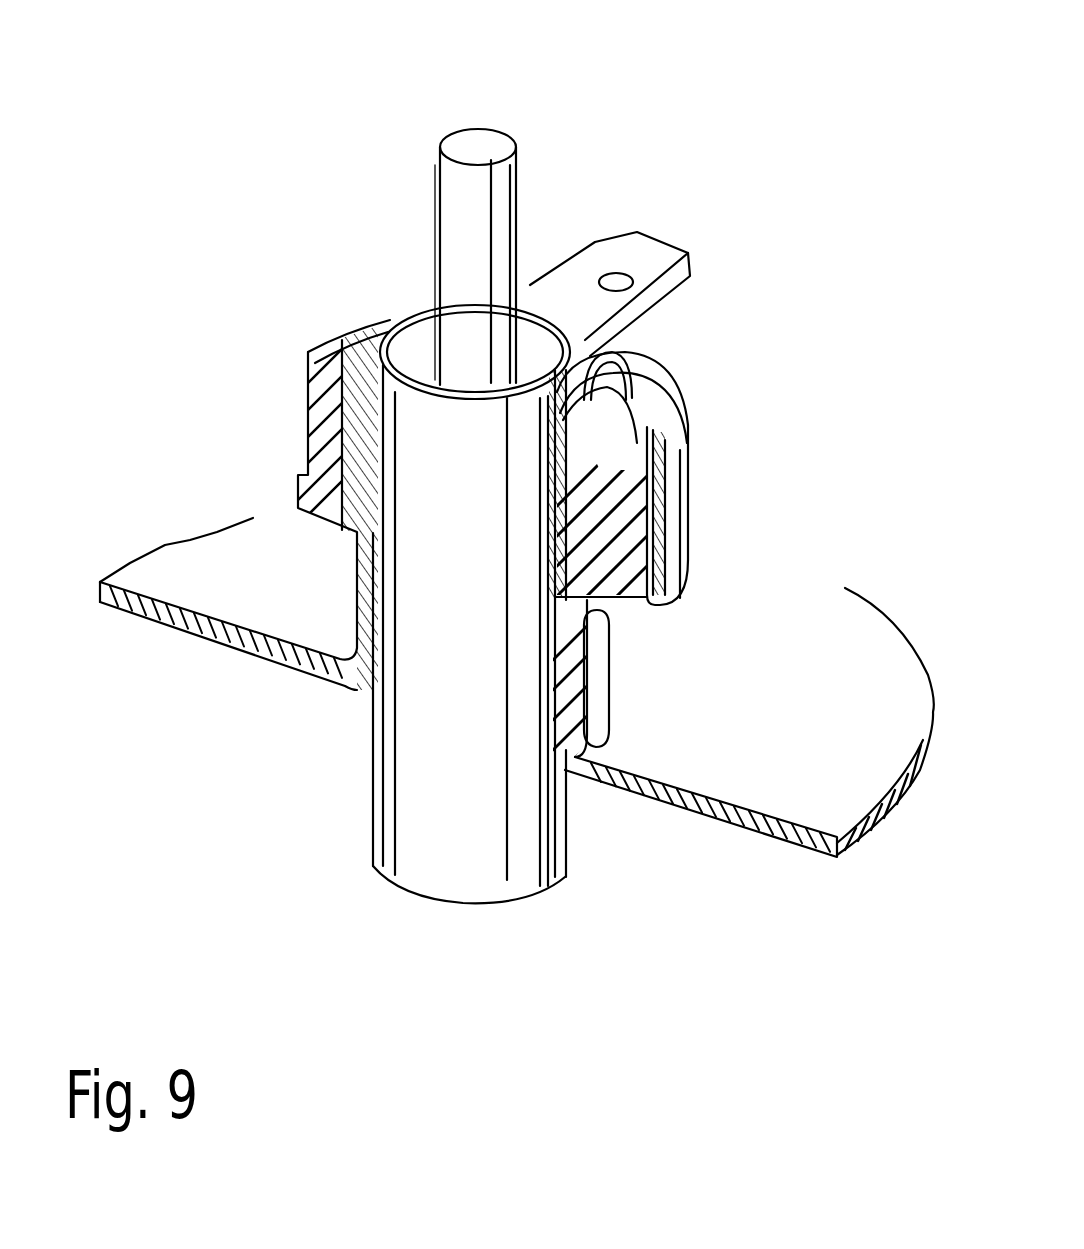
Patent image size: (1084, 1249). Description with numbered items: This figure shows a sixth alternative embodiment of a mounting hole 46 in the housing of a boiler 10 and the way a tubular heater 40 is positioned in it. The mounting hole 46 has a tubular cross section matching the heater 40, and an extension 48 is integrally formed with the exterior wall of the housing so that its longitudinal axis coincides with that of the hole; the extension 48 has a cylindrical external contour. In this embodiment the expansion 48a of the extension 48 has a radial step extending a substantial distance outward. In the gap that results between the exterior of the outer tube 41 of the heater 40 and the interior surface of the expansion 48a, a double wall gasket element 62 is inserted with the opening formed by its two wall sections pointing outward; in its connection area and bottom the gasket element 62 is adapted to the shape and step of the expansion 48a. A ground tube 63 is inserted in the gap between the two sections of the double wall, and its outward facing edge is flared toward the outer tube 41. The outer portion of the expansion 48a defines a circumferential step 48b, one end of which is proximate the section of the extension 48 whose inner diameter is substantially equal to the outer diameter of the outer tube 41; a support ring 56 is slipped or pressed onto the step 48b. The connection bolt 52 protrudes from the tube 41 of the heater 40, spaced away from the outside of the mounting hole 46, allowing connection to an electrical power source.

The boiler 10 is at (160, 533).
The tubular heater 40 is at (387, 812).
The outer tube 41 is at (557, 842).
The mounting hole 46 is at (345, 686).
The extension 48 is at (585, 657).
The expansion 48a is at (623, 530).
The circumferential step 48b is at (662, 610).
The connection bolt 52 is at (485, 150).
The support ring 56 is at (673, 487).
The double wall gasket element 62 is at (625, 390).
The ground tube 63 is at (625, 256).